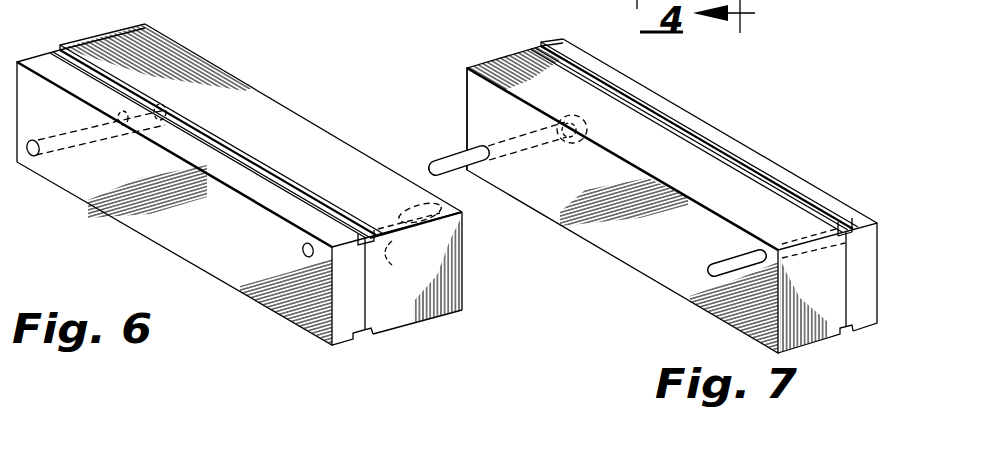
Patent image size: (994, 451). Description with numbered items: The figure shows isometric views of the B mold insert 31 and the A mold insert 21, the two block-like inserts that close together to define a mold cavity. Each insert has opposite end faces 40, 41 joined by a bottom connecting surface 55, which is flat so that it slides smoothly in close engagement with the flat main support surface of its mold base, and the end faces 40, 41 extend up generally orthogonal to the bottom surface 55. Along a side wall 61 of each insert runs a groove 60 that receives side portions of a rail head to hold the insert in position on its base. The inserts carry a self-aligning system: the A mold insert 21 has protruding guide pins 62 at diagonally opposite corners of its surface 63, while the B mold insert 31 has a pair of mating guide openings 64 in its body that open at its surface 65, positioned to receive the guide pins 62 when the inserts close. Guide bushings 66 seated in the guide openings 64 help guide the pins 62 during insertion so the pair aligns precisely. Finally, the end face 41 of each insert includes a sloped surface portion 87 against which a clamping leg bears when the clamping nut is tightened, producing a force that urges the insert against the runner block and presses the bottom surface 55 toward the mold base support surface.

In FIG. 7, the A mold insert 21 is at (466, 80).
In FIG. 6, the B mold insert 31 is at (289, 95).
In FIG. 6, the end face 40 is at (76, 48).
In FIG. 7, the end face 40 is at (500, 57).
In FIG. 6, the end face 41 is at (393, 320).
In FIG. 7, the end face 41 is at (817, 332).
In FIG. 6, the bottom connecting surface 55 is at (78, 182).
In FIG. 7, the bottom connecting surface 55 is at (737, 140).
In FIG. 6, the groove 60 is at (266, 168).
In FIG. 7, the groove 60 is at (768, 180).
In FIG. 6, the side wall 61 is at (365, 173).
In FIG. 7, the side wall 61 is at (693, 125).
In FIG. 7, the guide pin 62 is at (451, 157).
In FIG. 7, the surface 63 is at (520, 182).
In FIG. 6, the guide opening 64 is at (387, 256).
In FIG. 6, the surface 65 is at (462, 287).
In FIG. 6, the guide bushing 66 is at (463, 245).
In FIG. 6, the sloped surface portion 87 is at (346, 333).
In FIG. 7, the sloped surface portion 87 is at (860, 318).